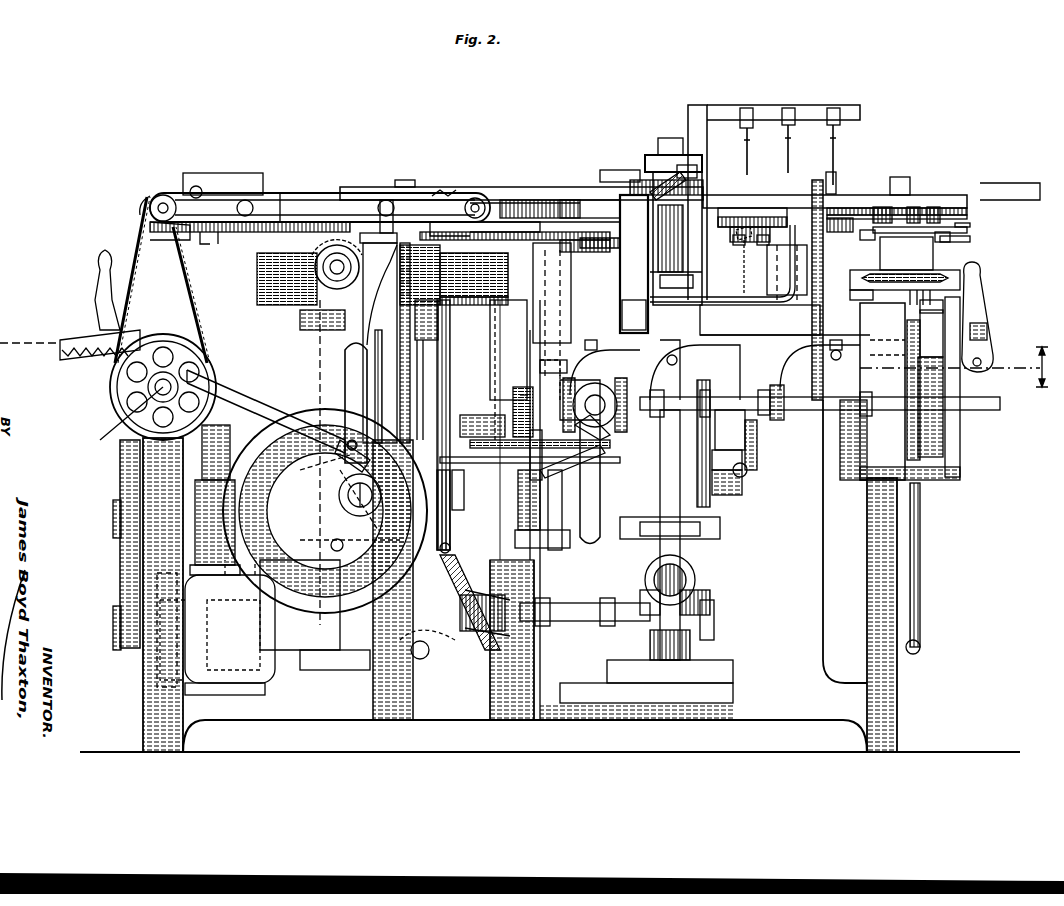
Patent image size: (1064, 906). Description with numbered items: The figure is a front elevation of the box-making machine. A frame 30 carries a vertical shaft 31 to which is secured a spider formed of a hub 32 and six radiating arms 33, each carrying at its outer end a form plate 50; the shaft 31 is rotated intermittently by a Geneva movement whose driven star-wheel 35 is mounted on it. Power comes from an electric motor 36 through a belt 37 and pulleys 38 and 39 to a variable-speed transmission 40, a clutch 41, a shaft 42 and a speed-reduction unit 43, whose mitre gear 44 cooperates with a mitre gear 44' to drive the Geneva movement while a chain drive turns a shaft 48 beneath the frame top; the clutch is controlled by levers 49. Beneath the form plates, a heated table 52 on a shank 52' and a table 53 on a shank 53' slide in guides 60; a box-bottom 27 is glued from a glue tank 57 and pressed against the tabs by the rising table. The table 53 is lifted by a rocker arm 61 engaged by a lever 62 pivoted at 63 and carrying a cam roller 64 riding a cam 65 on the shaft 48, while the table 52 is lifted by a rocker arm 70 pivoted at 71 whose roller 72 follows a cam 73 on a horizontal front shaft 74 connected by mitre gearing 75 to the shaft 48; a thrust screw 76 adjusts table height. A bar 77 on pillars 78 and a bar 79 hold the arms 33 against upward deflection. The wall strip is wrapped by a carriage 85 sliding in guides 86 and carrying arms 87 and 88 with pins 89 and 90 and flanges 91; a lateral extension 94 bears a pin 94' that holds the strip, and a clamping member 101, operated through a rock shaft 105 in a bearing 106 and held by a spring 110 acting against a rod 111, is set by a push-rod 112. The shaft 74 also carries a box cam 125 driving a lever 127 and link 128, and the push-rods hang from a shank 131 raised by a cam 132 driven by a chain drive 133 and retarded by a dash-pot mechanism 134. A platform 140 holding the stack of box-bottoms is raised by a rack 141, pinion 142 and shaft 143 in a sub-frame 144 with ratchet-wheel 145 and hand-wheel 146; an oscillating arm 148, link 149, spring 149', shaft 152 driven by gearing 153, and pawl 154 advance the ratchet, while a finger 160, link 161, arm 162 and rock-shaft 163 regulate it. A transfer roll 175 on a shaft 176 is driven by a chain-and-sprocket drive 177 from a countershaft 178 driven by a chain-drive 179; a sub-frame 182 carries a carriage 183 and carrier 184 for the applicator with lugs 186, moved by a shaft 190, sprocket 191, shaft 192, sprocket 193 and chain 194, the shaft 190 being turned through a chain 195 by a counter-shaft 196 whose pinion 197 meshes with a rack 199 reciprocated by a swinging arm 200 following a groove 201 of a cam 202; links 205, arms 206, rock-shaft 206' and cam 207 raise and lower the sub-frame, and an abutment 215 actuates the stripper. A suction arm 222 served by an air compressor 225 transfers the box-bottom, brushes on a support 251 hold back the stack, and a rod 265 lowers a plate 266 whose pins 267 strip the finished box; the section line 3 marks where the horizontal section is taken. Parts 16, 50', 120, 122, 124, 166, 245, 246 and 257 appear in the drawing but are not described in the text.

The section line 3 is at (960, 367).
The cam 16 is at (882, 335).
The box-bottom 27 is at (466, 200).
The frame 30 is at (898, 684).
The vertical shaft 31 is at (682, 555).
The hub 32 is at (660, 150).
The radiating arms 33 is at (560, 187).
The driven star-wheel 35 is at (720, 531).
The electric motor 36 is at (195, 620).
The belt 37 is at (128, 594).
The pulley 38 is at (126, 650).
The pulley 39 is at (122, 458).
The variable-speed transmission 40 is at (330, 655).
The clutch 41 is at (455, 631).
The shaft 42 is at (580, 622).
The speed-reduction unit 43 is at (700, 575).
The mitre gear 44 is at (700, 600).
The mitre gear 44' is at (734, 620).
The shaft 48 is at (605, 450).
The clutch-control levers 49 is at (95, 270).
The form plate 50 is at (760, 191).
The rack bar 50' is at (930, 204).
The table 52 is at (740, 239).
The shank 52' is at (840, 237).
The table 53 is at (585, 260).
The shank 53' is at (486, 275).
The glue tank 57 is at (300, 272).
The guides 60 is at (572, 272).
The rocker arm 61 is at (540, 360).
The lever 62 is at (625, 395).
The pivot 63 is at (669, 360).
The cam roller 64 is at (634, 315).
The cam 65 is at (612, 433).
The rocker arm 70 is at (785, 405).
The pivot 71 is at (790, 395).
The cam-following roller 72 is at (770, 397).
The cam 73 is at (730, 425).
The shaft 74 is at (857, 415).
The mitre gearing 75 is at (660, 370).
The adjustable thrust screw 76 is at (580, 340).
The bar 77 is at (575, 195).
The pillars 78 is at (330, 225).
The bar 79 is at (828, 208).
The carriage 85 is at (906, 253).
The guides 86 is at (866, 272).
The arm 87 is at (862, 239).
The arm 88 is at (945, 242).
The pin 89 is at (882, 204).
The pin 90 is at (935, 204).
The flange 91 is at (915, 220).
The lateral extension 94 is at (991, 242).
The pin 94' is at (1002, 227).
The clamping member 101 is at (838, 172).
The rock shaft 105 is at (791, 170).
The bearing 106 is at (750, 172).
The spring 110 is at (652, 185).
The rod 111 is at (600, 170).
The push-rod 112 is at (782, 320).
The lever 120 is at (905, 430).
The rod 122 is at (921, 580).
The ball 124 is at (921, 646).
The box cam 125 is at (945, 440).
The lever 127 is at (960, 387).
The link 128 is at (920, 308).
The shank 131 is at (755, 450).
The cam 132 is at (745, 472).
The chain drive 133 is at (730, 490).
The dash-pot mechanism 134 is at (735, 425).
The platform 140 is at (485, 296).
The rack 141 is at (450, 330).
The pinion 142 is at (452, 550).
The shaft 143 is at (455, 518).
The sub-frame 144 is at (510, 440).
The ratchet-wheel 145 is at (545, 505).
The hand-wheel 146 is at (600, 480).
The oscillating arm 148 is at (565, 520).
The link 149 is at (514, 403).
The spring 149' is at (509, 389).
The shaft 152 is at (482, 427).
The gearing 153 is at (580, 380).
The pawl 154 is at (545, 548).
The finger 160 is at (432, 220).
The link 161 is at (345, 320).
The arm 162 is at (508, 370).
The rock-shaft 163 is at (370, 540).
The pin 166 is at (545, 462).
The transfer roll 175 is at (355, 215).
The shaft 176 is at (325, 270).
The chain-and-sprocket drive 177 is at (330, 382).
The countershaft 178 is at (340, 505).
The chain-drive 179 is at (512, 510).
The sub-frame 182 is at (290, 192).
The carriage 183 is at (210, 172).
The carrier 184 is at (185, 228).
The lugs 186 is at (212, 249).
The shaft 190 is at (165, 196).
The sprocket 191 is at (140, 195).
The shaft 192 is at (510, 200).
The sprocket 193 is at (480, 200).
The chain 194 is at (262, 192).
The chain 195 is at (135, 245).
The counter-shaft 196 is at (118, 415).
The pinion 197 is at (110, 403).
The rack 199 is at (70, 355).
The swinging arm 200 is at (400, 628).
The groove 201 is at (345, 445).
The cam 202 is at (225, 515).
The links 205 is at (400, 185).
The arms 206 is at (327, 500).
The rock-shaft 206' is at (317, 461).
The cam 207 is at (345, 545).
The abutment 215 is at (445, 192).
The arm 222 is at (515, 230).
The air compressor 225 is at (210, 683).
The bar 245 is at (600, 238).
The bar 246 is at (630, 186).
The support 251 is at (487, 290).
The pipe 257 is at (763, 264).
The rod 265 is at (707, 142).
The plate 266 is at (858, 108).
The pins 267 is at (838, 142).